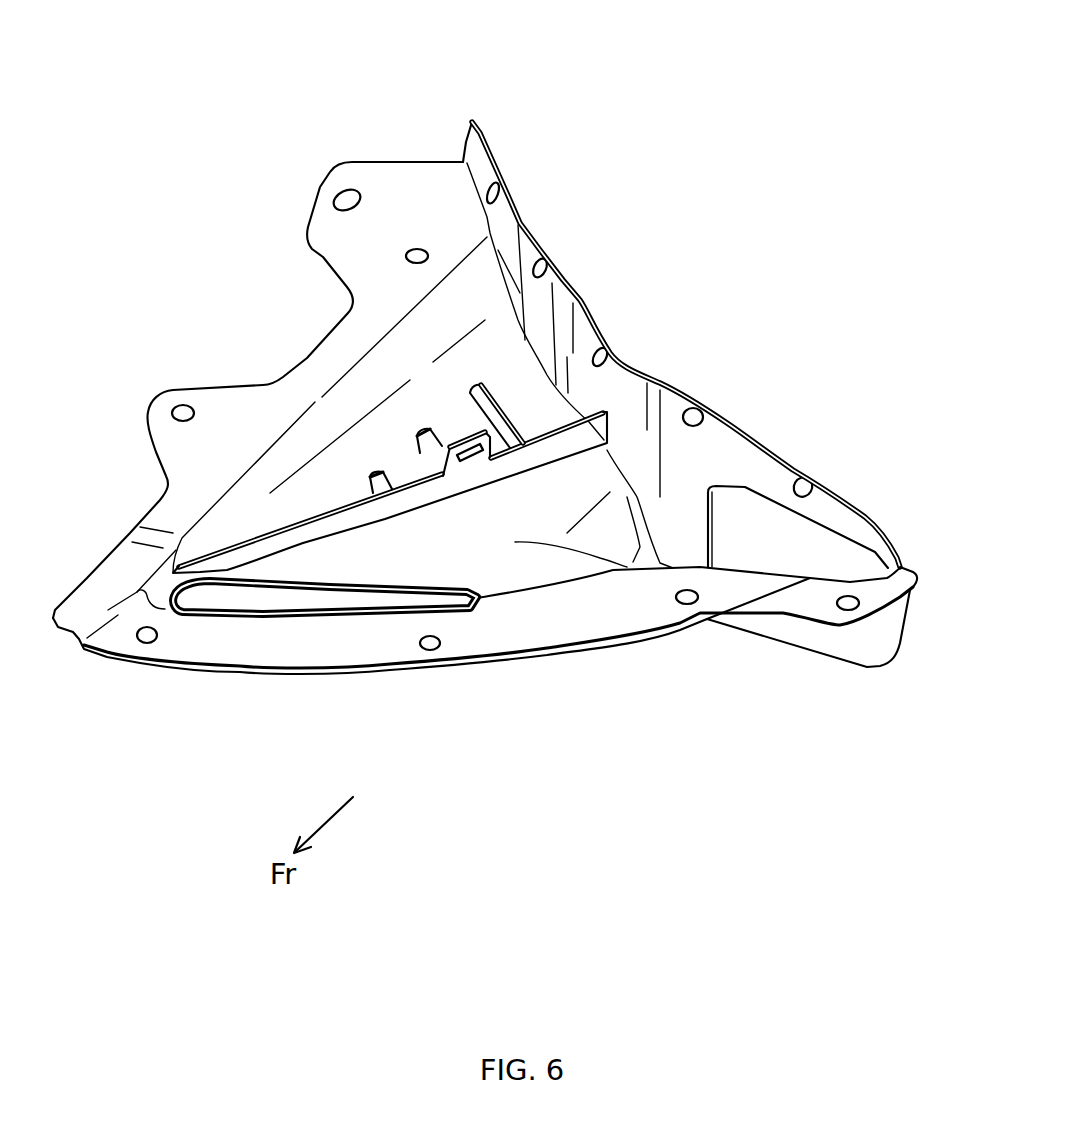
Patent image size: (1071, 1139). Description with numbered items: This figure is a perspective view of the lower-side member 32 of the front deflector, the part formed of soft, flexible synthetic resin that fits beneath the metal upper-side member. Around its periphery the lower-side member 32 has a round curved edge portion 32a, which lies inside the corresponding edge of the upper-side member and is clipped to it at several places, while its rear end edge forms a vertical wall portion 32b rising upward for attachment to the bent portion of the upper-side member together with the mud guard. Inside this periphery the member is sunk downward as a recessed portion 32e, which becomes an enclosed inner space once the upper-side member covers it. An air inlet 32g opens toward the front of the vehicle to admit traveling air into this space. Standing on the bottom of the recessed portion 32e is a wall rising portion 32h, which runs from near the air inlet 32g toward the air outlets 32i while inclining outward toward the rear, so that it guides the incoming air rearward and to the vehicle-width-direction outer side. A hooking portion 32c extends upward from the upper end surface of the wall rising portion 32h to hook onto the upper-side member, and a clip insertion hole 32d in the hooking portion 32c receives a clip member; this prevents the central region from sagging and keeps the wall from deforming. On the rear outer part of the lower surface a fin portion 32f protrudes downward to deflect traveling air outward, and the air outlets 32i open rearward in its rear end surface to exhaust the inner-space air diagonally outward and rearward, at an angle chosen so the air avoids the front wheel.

The lower-side member 32 is at (518, 99).
The curved edge portion 32a is at (547, 627).
The vertical wall portion 32b is at (587, 337).
The hooking portion 32c is at (462, 438).
The clip insertion hole 32d is at (468, 461).
The recessed portion 32e is at (590, 488).
The fin portion 32f is at (783, 630).
The air inlet 32g is at (263, 605).
The wall rising portion 32h is at (403, 503).
The air outlets 32i is at (430, 451).